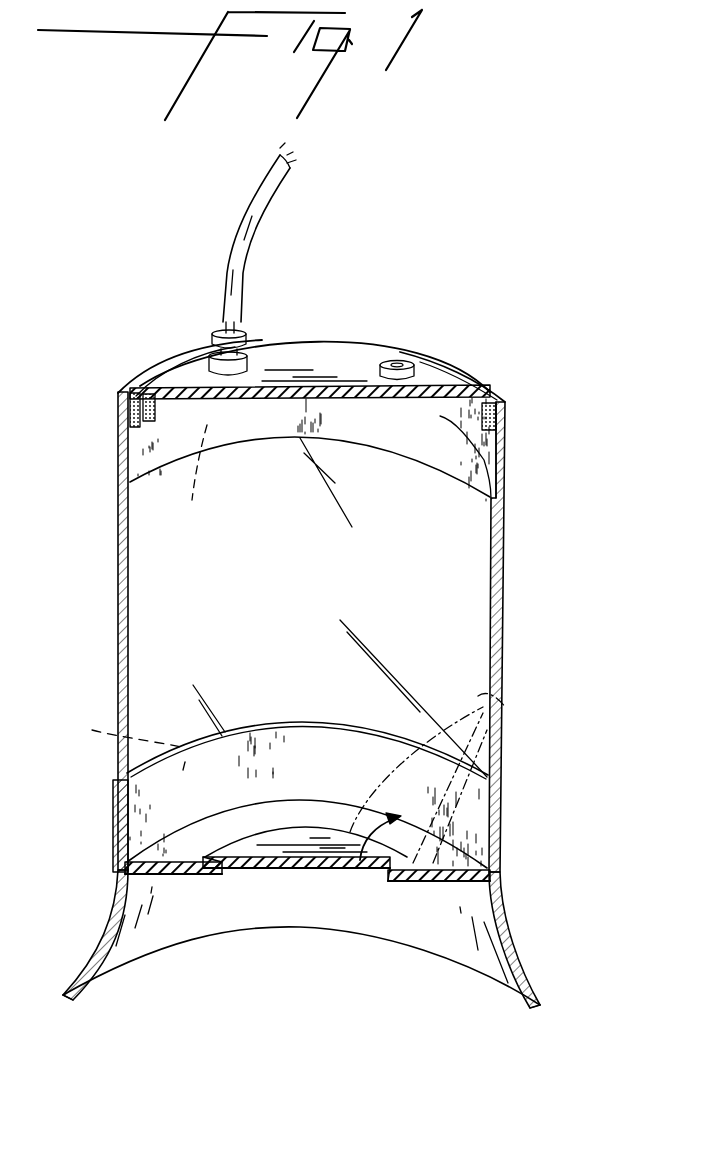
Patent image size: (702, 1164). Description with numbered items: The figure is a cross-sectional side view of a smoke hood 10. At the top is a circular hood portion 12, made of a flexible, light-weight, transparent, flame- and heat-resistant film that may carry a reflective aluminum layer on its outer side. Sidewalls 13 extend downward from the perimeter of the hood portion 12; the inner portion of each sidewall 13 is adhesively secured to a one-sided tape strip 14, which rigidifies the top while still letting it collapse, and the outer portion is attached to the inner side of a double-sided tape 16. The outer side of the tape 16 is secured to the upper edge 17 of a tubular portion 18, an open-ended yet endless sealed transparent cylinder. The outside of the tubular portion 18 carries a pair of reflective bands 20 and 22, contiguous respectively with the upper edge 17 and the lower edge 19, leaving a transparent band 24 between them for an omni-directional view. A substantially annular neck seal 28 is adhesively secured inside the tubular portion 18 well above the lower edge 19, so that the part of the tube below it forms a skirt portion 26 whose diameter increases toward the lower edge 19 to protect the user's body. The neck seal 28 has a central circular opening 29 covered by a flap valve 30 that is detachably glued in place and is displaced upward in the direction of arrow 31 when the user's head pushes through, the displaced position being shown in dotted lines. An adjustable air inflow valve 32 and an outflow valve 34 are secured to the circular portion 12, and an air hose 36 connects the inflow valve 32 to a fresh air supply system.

The smoke hood 10 is at (472, 360).
The circular hood portion 12 is at (318, 360).
The sidewalls 13 is at (455, 481).
The one-sided tape strip 14 is at (477, 427).
The double-sided tape 16 is at (478, 433).
The upper edge 17 is at (494, 389).
The tubular portion 18 is at (490, 590).
The lower edge 19 is at (545, 1007).
The reflective band 20 is at (121, 437).
The reflective band 22 is at (113, 812).
The transparent band 24 is at (198, 575).
The skirt portion 26 is at (140, 930).
The neck seal 28 is at (440, 858).
The circular opening 29 is at (391, 876).
The flap valve 30 is at (501, 707).
The arrow 31 is at (303, 870).
The air inflow valve 32 is at (248, 327).
The outflow valve 34 is at (400, 364).
The air hose 36 is at (273, 192).